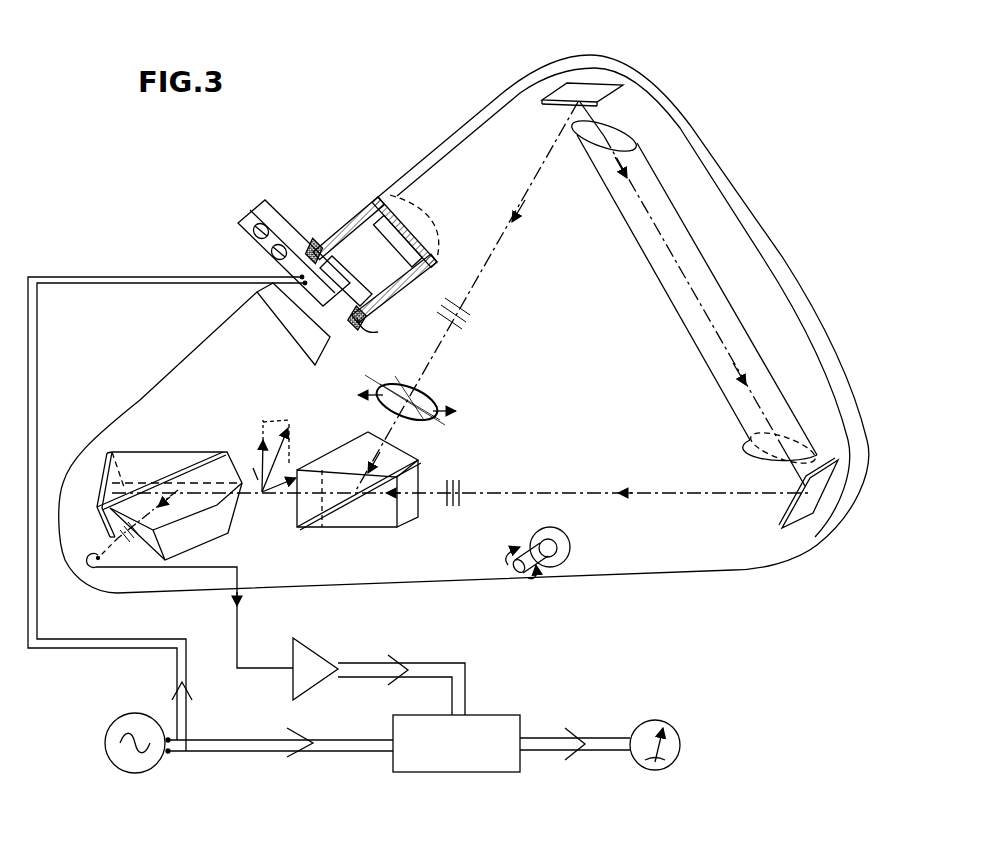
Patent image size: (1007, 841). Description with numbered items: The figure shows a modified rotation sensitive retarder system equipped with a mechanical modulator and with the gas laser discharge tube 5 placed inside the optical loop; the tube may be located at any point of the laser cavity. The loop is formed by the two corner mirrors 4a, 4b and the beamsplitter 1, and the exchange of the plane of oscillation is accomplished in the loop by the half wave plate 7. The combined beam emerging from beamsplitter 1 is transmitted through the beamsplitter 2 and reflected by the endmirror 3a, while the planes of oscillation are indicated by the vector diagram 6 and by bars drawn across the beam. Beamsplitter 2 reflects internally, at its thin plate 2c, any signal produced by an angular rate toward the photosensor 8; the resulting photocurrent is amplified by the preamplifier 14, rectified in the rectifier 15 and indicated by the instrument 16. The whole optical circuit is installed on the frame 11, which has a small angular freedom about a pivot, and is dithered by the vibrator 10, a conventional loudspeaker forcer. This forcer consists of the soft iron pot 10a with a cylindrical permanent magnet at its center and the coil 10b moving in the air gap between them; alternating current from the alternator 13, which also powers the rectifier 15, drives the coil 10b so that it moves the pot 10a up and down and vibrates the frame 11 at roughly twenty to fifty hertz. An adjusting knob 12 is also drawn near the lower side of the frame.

The beamsplitter 1 is at (359, 495).
The beamsplitter 2 is at (176, 491).
The thin plate 2c is at (219, 470).
The endmirror 3a is at (92, 494).
The corner mirror 4a is at (786, 520).
The corner mirror 4b is at (564, 110).
The discharge tube 5 is at (690, 268).
The vector diagram 6 is at (278, 460).
The half wave plate 7 is at (447, 398).
The photosensor 8 is at (92, 557).
The mechanical modulator 10 is at (337, 281).
The soft iron pot 10a is at (452, 236).
The coil 10b is at (383, 336).
The frame 11 is at (464, 324).
The adjusting knob 12 is at (519, 573).
The alternator 13 is at (137, 729).
The preamplifier 14 is at (315, 669).
The rectifier 15 is at (456, 743).
The instrument 16 is at (655, 731).